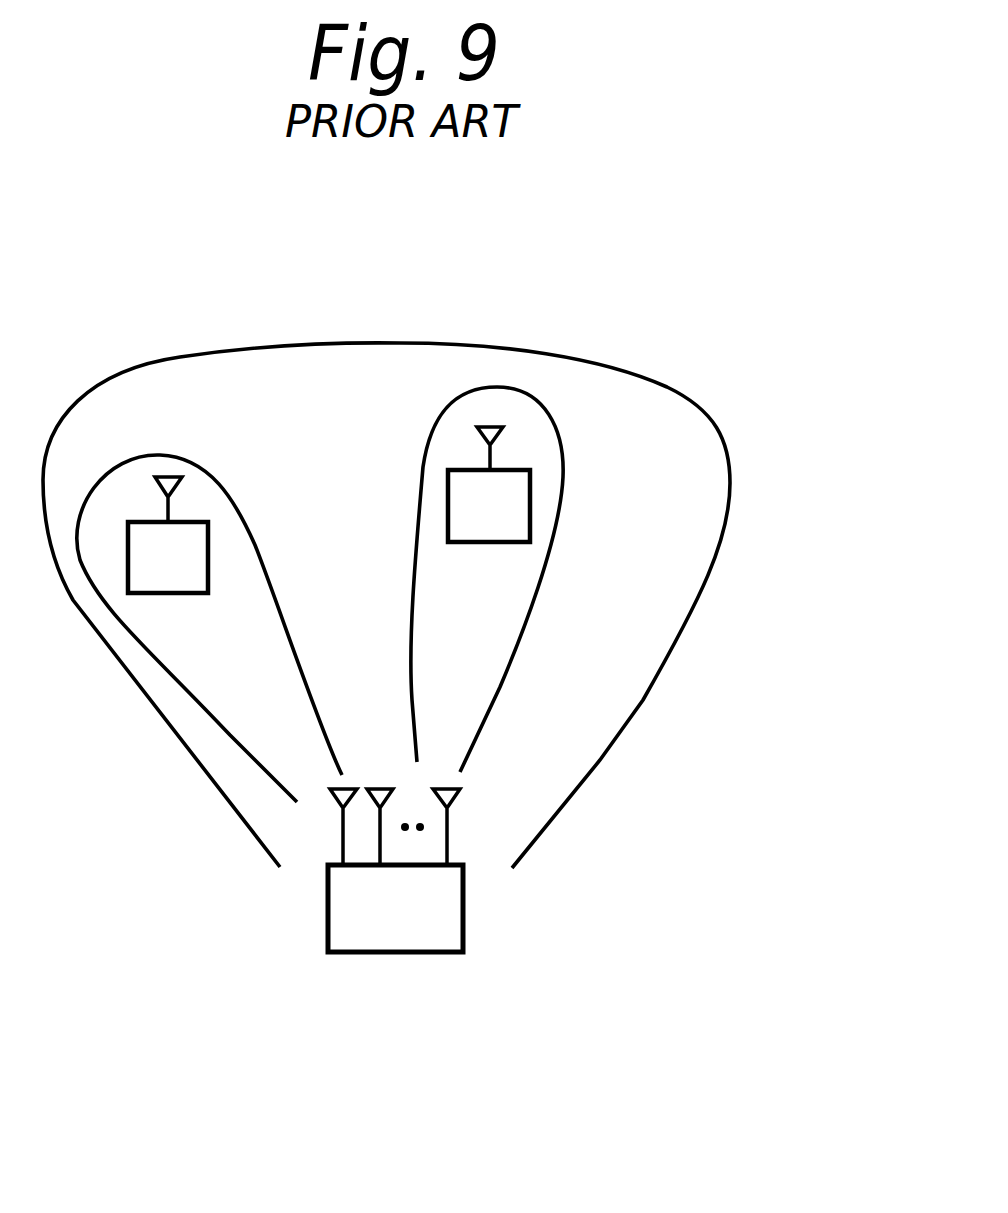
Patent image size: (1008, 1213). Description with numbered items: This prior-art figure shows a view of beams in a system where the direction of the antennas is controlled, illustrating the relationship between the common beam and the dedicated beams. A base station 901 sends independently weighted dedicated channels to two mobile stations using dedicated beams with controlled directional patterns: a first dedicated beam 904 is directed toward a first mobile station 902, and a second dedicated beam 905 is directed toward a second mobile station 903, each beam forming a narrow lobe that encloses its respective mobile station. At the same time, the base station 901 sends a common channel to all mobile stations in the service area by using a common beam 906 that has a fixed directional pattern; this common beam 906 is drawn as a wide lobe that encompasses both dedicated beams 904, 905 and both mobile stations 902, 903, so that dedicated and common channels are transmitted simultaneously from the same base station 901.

The base station 901 is at (392, 952).
The mobile station 902 is at (170, 593).
The mobile station 903 is at (493, 542).
The dedicated beam 904 is at (148, 452).
The dedicated beam 905 is at (440, 417).
The common beam 906 is at (658, 675).